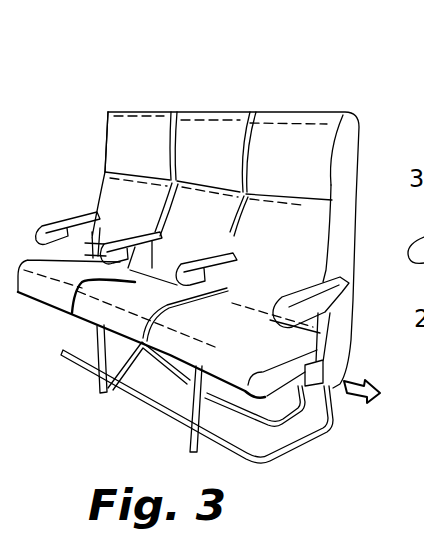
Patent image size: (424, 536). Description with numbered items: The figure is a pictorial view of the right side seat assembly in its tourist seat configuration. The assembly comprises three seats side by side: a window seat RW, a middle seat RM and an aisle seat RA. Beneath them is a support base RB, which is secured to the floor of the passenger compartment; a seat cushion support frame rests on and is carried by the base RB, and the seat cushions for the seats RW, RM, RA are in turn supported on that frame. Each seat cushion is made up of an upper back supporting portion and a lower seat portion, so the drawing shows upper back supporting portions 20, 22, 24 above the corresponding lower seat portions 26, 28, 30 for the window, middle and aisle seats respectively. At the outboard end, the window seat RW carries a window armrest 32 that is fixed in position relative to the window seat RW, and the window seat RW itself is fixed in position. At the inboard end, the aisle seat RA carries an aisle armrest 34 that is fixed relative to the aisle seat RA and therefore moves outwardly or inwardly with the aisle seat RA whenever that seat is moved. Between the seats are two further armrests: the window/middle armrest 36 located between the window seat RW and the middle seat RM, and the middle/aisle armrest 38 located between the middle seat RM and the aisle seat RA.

The upper back supporting portion 20 is at (118, 138).
The upper back supporting portion 22 is at (213, 128).
The upper back supporting portion 24 is at (349, 143).
The lower seat portion 26 is at (53, 292).
The lower seat portion 28 is at (91, 347).
The lower seat portion 30 is at (190, 392).
The window armrest 32 is at (44, 228).
The aisle armrest 34 is at (339, 306).
The window/middle armrest 36 is at (130, 259).
The middle/aisle armrest 38 is at (232, 286).
The window seat RW is at (157, 97).
The middle seat RM is at (220, 95).
The aisle seat RA is at (317, 100).
The support base RB is at (125, 406).